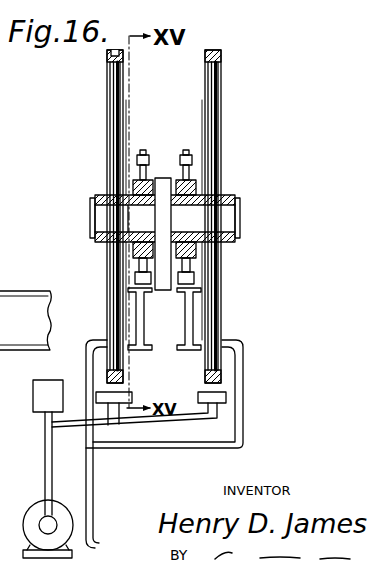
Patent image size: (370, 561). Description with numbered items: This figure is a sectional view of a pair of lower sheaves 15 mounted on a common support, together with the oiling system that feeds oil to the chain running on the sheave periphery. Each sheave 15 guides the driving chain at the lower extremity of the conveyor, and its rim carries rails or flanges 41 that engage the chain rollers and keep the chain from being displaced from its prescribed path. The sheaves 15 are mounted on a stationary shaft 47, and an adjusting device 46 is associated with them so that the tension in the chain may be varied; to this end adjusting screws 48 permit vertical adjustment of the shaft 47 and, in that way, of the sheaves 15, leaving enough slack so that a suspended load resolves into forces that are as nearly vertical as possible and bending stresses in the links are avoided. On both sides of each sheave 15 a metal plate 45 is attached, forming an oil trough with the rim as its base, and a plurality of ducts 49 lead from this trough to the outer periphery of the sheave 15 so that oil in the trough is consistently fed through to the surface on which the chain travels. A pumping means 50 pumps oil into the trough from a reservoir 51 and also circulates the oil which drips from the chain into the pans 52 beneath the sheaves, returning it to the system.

The sheave 15 is at (118, 132).
The rails or flanges 41 is at (113, 50).
The metal plate 45 is at (90, 357).
The adjusting device 46 is at (157, 176).
The shaft 47 is at (100, 223).
The adjusting screws 48 is at (138, 156).
The ducts 49 is at (126, 380).
The pumping means 50 is at (56, 512).
The reservoir 51 is at (58, 404).
The pans 52 is at (105, 425).